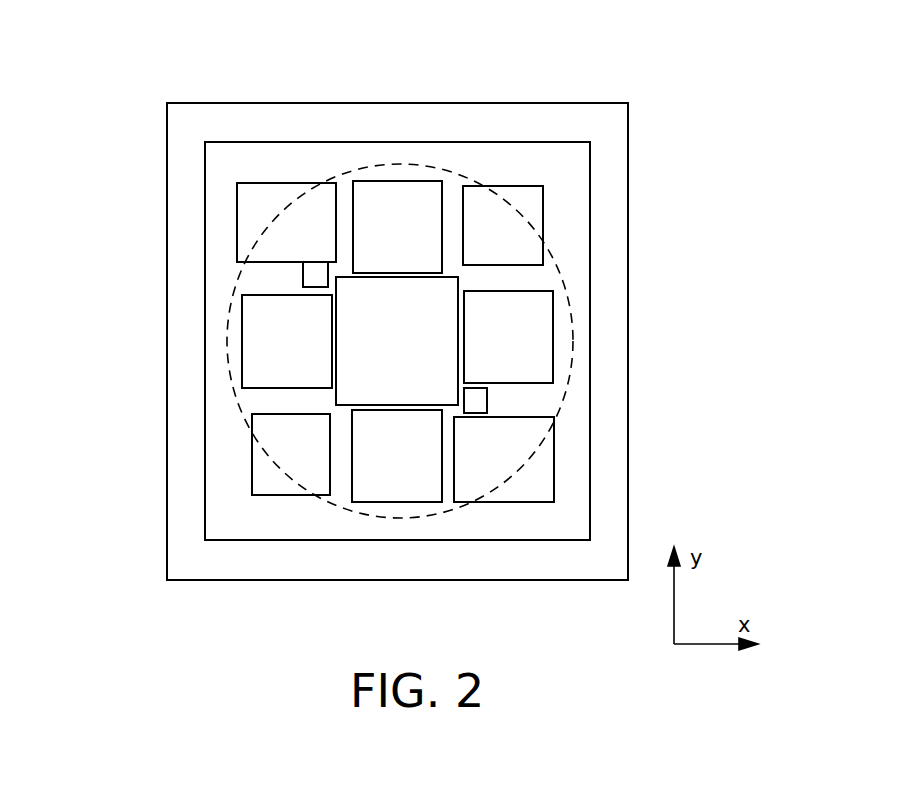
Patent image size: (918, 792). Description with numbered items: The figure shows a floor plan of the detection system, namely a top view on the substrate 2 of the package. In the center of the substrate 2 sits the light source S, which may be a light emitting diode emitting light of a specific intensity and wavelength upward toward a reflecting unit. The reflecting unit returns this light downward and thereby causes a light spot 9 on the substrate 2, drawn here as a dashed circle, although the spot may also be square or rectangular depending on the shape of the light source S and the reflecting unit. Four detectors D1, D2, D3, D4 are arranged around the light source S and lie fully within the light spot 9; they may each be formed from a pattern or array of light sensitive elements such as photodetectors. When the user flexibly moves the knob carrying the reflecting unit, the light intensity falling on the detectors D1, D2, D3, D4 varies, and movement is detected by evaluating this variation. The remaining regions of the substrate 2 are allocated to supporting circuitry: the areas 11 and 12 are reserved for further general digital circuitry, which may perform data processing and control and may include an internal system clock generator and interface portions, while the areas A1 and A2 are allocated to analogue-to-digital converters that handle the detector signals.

The substrate 2 is at (283, 522).
The light spot 9 is at (568, 386).
The digital circuit area 11 is at (537, 473).
The digital circuit area 12 is at (258, 203).
The light source S is at (377, 305).
The detector D1 is at (413, 197).
The detector D2 is at (421, 485).
The detector D3 is at (258, 349).
The detector D4 is at (537, 354).
The area for analogue-to-digital converter A1 is at (529, 207).
The area for analogue-to-digital converter A2 is at (267, 472).